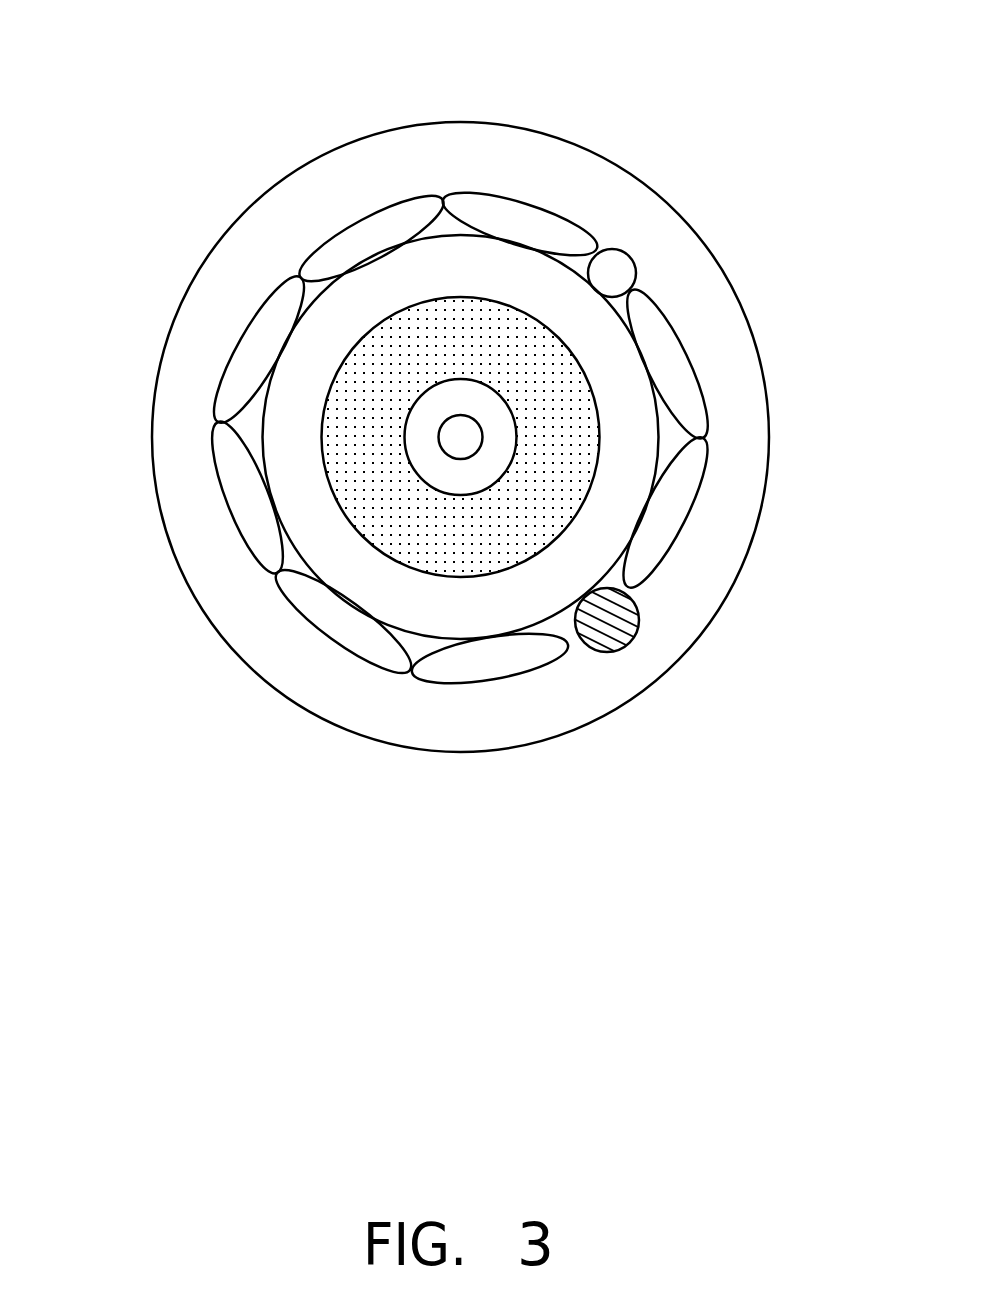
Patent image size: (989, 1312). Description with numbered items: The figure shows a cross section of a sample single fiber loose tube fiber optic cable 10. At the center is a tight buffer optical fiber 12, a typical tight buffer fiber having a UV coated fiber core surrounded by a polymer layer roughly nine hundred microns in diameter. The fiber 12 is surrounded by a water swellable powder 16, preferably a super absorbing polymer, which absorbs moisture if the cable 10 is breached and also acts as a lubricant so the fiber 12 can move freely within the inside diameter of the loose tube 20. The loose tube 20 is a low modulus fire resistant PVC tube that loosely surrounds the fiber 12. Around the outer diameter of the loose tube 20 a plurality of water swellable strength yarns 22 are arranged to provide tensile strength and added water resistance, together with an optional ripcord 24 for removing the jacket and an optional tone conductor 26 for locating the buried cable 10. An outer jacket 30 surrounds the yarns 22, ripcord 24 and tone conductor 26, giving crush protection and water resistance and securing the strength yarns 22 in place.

The loose tube fiber optic cable 10 is at (203, 134).
The tight buffer optical fiber 12 is at (407, 407).
The water swellable powder 16 is at (578, 465).
The loose tube 20 is at (628, 380).
The water swellable strength yarns 22 is at (508, 217).
The ripcord 24 is at (625, 263).
The tone conductor 26 is at (612, 634).
The outer jacket 30 is at (465, 732).